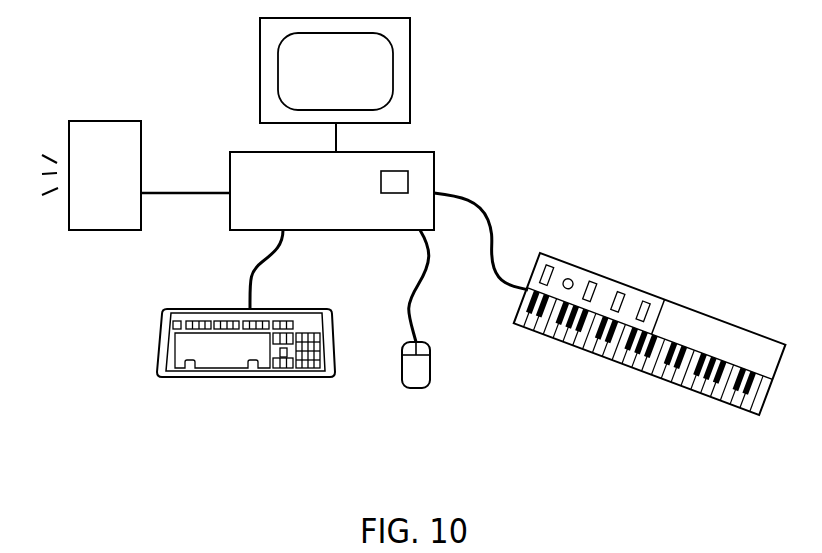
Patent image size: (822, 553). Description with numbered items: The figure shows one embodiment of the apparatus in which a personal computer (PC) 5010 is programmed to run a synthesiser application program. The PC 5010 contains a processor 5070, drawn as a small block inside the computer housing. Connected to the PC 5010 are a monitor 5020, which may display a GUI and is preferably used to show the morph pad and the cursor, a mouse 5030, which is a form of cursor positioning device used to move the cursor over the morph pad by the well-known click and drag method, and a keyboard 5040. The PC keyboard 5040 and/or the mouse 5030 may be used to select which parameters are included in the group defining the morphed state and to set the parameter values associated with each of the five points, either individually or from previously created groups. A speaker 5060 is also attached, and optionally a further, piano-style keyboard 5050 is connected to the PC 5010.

The personal computer 5010 is at (434, 167).
The monitor 5020 is at (410, 50).
The mouse 5030 is at (408, 390).
The keyboard 5040 is at (228, 379).
The piano-style keyboard 5050 is at (655, 380).
The speaker 5060 is at (97, 120).
The processor 5070 is at (395, 180).